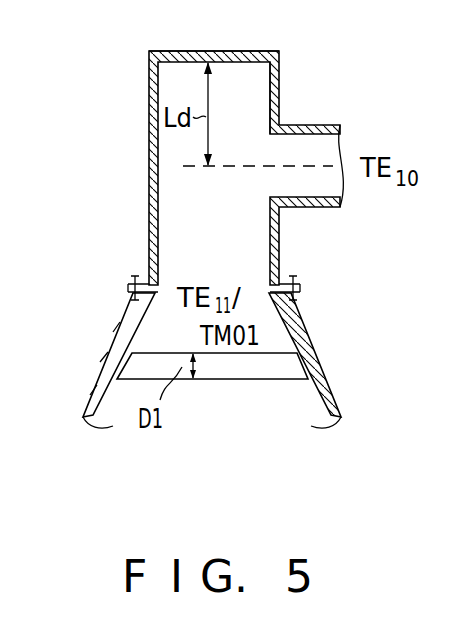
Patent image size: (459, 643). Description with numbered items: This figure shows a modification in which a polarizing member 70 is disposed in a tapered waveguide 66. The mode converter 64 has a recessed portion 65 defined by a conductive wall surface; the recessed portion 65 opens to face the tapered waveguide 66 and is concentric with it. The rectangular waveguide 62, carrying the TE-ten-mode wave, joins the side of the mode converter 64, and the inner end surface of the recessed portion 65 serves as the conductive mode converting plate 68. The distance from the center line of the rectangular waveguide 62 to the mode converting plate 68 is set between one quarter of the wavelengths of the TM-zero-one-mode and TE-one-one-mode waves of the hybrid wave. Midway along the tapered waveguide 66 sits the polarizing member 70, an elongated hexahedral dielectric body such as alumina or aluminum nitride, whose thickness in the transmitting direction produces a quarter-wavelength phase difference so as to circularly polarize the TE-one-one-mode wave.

The rectangular waveguide 62 is at (333, 125).
The mode converter 64 is at (140, 122).
The recessed portion 65 is at (253, 110).
The tapered waveguide 66 is at (303, 341).
The mode converting plate 68 is at (273, 49).
The polarizing member 70 is at (248, 370).